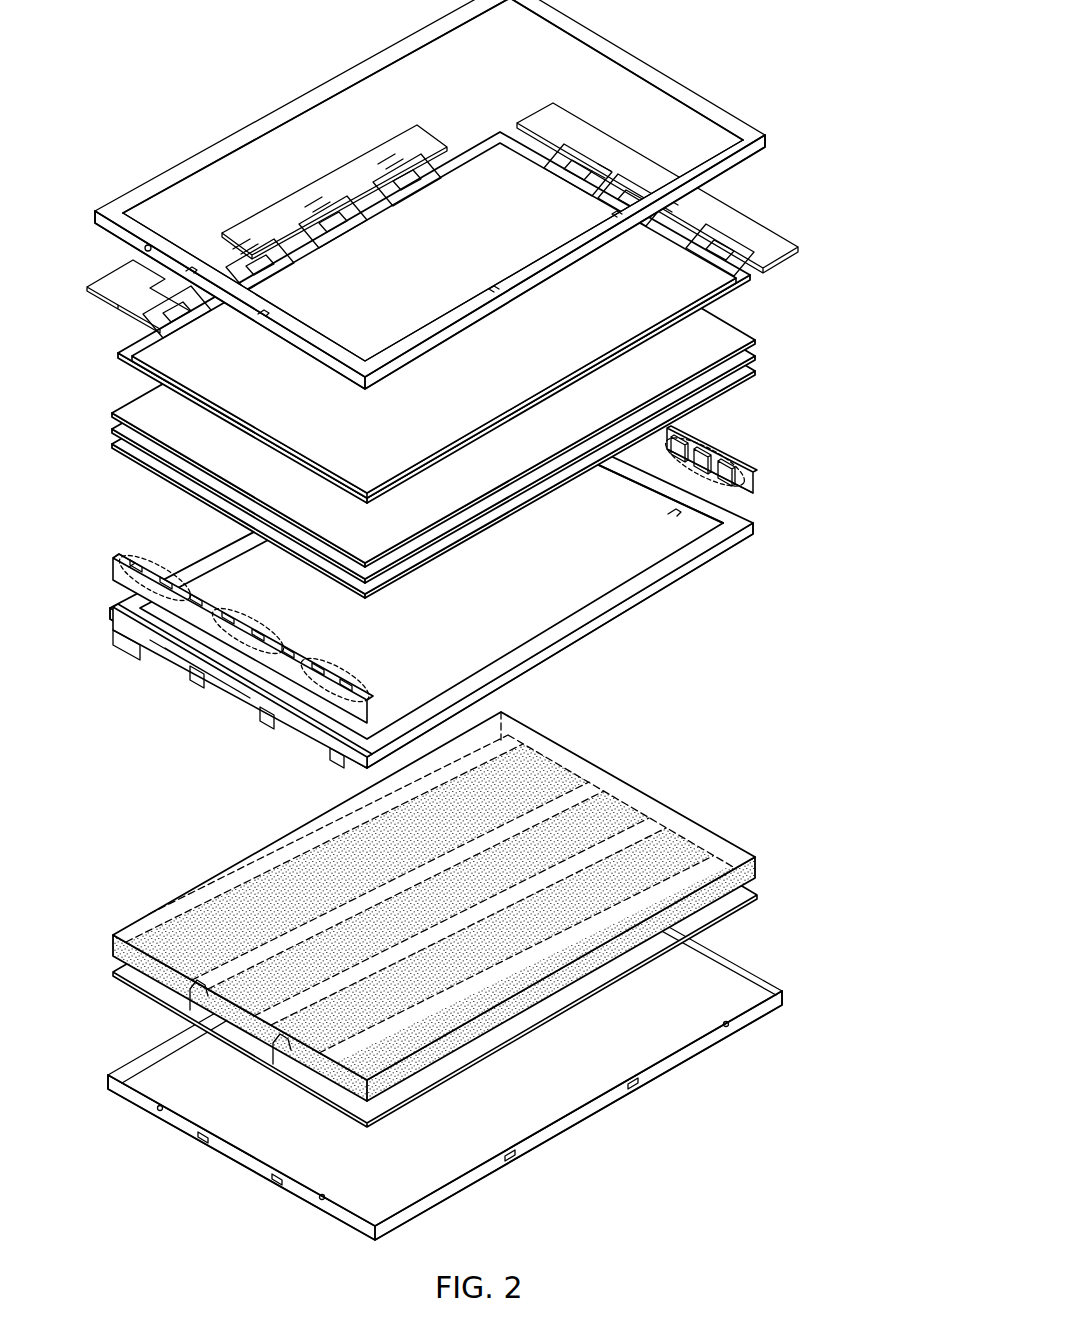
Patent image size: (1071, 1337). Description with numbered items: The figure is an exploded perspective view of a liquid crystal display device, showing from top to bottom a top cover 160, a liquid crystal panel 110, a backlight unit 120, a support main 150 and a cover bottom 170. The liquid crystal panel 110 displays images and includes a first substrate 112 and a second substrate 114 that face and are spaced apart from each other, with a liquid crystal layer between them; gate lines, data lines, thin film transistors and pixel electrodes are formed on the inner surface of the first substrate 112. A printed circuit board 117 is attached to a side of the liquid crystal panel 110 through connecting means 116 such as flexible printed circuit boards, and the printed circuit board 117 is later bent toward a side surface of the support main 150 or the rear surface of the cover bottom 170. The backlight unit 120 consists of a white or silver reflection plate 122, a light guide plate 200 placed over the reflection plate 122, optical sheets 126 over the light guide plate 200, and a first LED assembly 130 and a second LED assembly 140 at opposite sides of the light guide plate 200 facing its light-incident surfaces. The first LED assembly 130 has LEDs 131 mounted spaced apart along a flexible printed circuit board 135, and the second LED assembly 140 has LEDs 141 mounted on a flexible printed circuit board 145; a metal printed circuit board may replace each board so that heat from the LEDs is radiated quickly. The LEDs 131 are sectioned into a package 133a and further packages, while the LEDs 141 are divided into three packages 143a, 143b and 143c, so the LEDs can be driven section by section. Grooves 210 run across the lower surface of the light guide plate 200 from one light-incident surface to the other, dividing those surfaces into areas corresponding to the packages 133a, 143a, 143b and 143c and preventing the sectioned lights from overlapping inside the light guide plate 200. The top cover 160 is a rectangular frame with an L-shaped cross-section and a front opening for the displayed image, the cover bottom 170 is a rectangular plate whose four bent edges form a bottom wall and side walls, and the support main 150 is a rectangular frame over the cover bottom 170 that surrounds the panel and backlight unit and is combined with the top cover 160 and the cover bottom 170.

The liquid crystal panel 110 is at (489, 295).
The first substrate 112 is at (763, 260).
The second substrate 114 is at (713, 280).
The connecting means 116 is at (540, 153).
The printed circuit board 117 is at (375, 157).
The backlight unit 120 is at (480, 658).
The reflection plate 122 is at (758, 895).
The optical sheets 126 is at (465, 394).
The first LED assembly 130 is at (754, 442).
The LEDs 131 is at (733, 462).
The package 133a is at (720, 447).
The flexible printed circuit board 135 is at (754, 471).
The second LED assembly 140 is at (233, 605).
The LEDs 141 is at (150, 572).
The package 143a is at (337, 672).
The package 143b is at (254, 625).
The package 143c is at (178, 573).
The flexible printed circuit board 145 is at (122, 560).
The support main 150 is at (115, 610).
The top cover 160 is at (756, 128).
The cover bottom 170 is at (598, 1113).
The light guide plate 200 is at (420, 906).
The grooves 210 is at (194, 999).